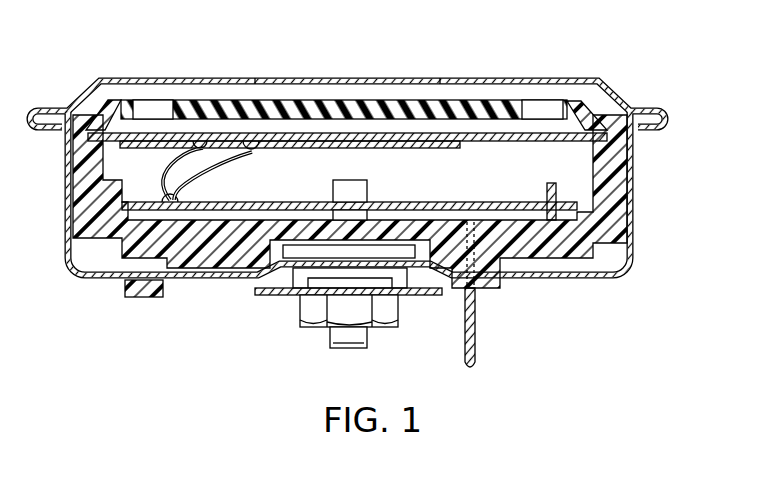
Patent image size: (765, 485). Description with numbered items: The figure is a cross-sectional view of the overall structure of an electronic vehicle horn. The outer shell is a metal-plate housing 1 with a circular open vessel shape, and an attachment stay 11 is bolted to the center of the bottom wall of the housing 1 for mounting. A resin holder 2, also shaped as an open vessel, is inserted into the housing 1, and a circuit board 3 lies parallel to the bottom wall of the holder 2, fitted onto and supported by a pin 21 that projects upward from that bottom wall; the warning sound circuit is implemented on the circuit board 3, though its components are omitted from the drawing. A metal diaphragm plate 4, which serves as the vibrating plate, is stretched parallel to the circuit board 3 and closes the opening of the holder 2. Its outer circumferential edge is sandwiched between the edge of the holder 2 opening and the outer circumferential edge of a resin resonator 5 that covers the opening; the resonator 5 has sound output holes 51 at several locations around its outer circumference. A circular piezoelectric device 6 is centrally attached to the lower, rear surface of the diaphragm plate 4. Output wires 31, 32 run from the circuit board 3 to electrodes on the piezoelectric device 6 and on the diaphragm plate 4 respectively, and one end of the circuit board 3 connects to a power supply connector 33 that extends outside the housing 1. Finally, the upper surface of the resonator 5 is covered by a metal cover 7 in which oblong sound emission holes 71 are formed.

The housing 1 is at (587, 278).
The holder 2 is at (610, 196).
The circuit board 3 is at (442, 206).
The diaphragm plate 4 is at (493, 133).
The resonator 5 is at (331, 108).
The piezoelectric device 6 is at (378, 143).
The cover 7 is at (296, 80).
The attachment stay 11 is at (267, 297).
The pin 21 is at (332, 186).
The output wire 31 is at (200, 162).
The output wire 32 is at (160, 168).
The power supply connector 33 is at (492, 258).
The sound output hole 51 is at (160, 110).
The sound emission hole 71 is at (255, 80).